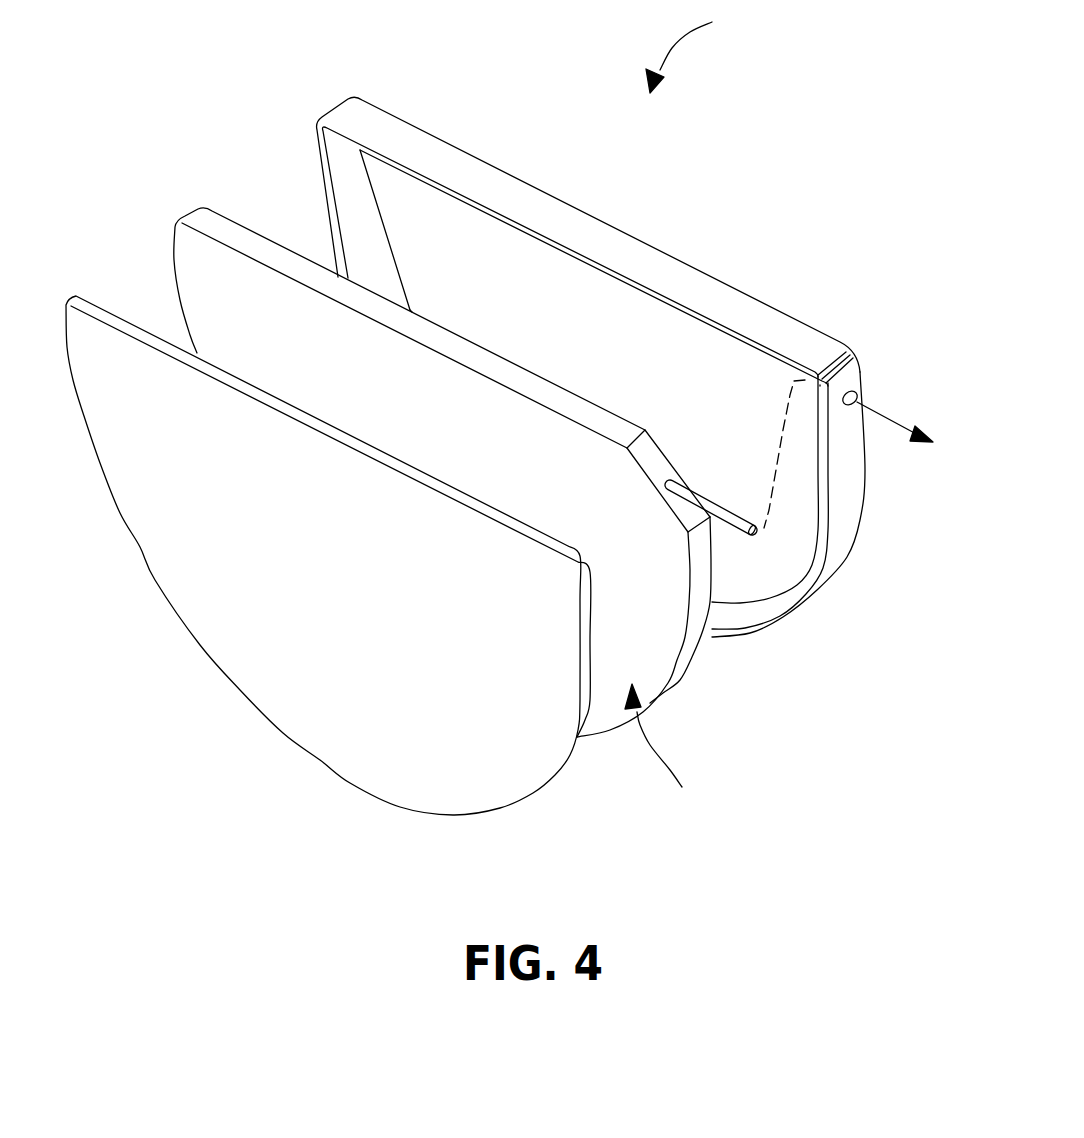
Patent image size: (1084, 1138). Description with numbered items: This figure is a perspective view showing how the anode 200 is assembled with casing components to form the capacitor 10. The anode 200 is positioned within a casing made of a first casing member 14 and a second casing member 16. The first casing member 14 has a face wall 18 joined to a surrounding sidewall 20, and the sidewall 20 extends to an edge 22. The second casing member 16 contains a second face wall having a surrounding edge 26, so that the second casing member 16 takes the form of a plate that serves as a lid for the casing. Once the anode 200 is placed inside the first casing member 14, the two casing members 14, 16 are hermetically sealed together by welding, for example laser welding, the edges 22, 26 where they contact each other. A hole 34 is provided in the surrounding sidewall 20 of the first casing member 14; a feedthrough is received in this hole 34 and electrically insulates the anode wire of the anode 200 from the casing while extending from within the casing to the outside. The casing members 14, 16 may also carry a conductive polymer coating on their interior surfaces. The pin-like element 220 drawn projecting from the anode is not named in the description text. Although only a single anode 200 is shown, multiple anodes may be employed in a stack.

The capacitor 10 is at (698, 48).
The first casing member 14 is at (683, 375).
The second casing member 16 is at (308, 707).
The face wall 18 is at (455, 212).
The surrounding sidewall 20 is at (615, 247).
The edge 22 is at (553, 248).
The surrounding edge 26 is at (345, 436).
The hole 34 is at (853, 387).
The anode 200 is at (669, 755).
The pin 220 is at (730, 518).